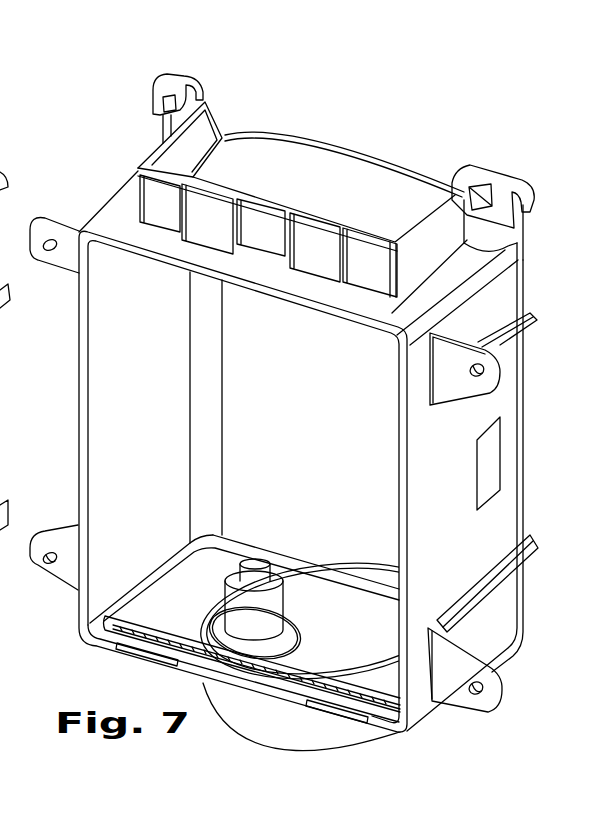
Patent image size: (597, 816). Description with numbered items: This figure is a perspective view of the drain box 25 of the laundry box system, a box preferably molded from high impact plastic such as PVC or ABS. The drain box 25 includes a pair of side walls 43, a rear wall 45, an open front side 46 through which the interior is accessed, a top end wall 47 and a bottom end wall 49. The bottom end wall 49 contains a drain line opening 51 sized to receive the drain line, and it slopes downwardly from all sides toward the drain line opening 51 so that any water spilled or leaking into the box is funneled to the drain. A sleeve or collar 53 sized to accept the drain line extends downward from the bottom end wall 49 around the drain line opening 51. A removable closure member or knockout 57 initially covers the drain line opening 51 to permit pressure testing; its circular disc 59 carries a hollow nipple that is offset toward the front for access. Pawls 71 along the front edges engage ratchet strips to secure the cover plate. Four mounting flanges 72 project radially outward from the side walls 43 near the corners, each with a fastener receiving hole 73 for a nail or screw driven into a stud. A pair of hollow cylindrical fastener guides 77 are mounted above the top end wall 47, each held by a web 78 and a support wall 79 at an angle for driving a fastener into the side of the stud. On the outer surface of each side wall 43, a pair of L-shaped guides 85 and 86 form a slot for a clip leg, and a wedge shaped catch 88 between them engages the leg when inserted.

The drain box 25 is at (100, 77).
The side walls 43 is at (152, 400).
The rear wall 45 is at (339, 414).
The open front side 46 is at (72, 470).
The top end wall 47 is at (115, 233).
The bottom end wall 49 is at (178, 593).
The drain line opening 51 is at (300, 673).
The collar 53 is at (307, 740).
The closure member 57 is at (328, 600).
The circular disc 59 is at (307, 608).
The pawls 71 is at (125, 656).
The mounting flanges 72 is at (50, 270).
The fastener receiving hole 73 is at (48, 566).
The fastener guides 77 is at (190, 79).
The web 78 is at (158, 122).
The support wall 79 is at (410, 195).
The L-shaped guide 85 is at (497, 583).
The L-shaped guide 86 is at (510, 347).
The wedge shaped catch 88 is at (485, 467).